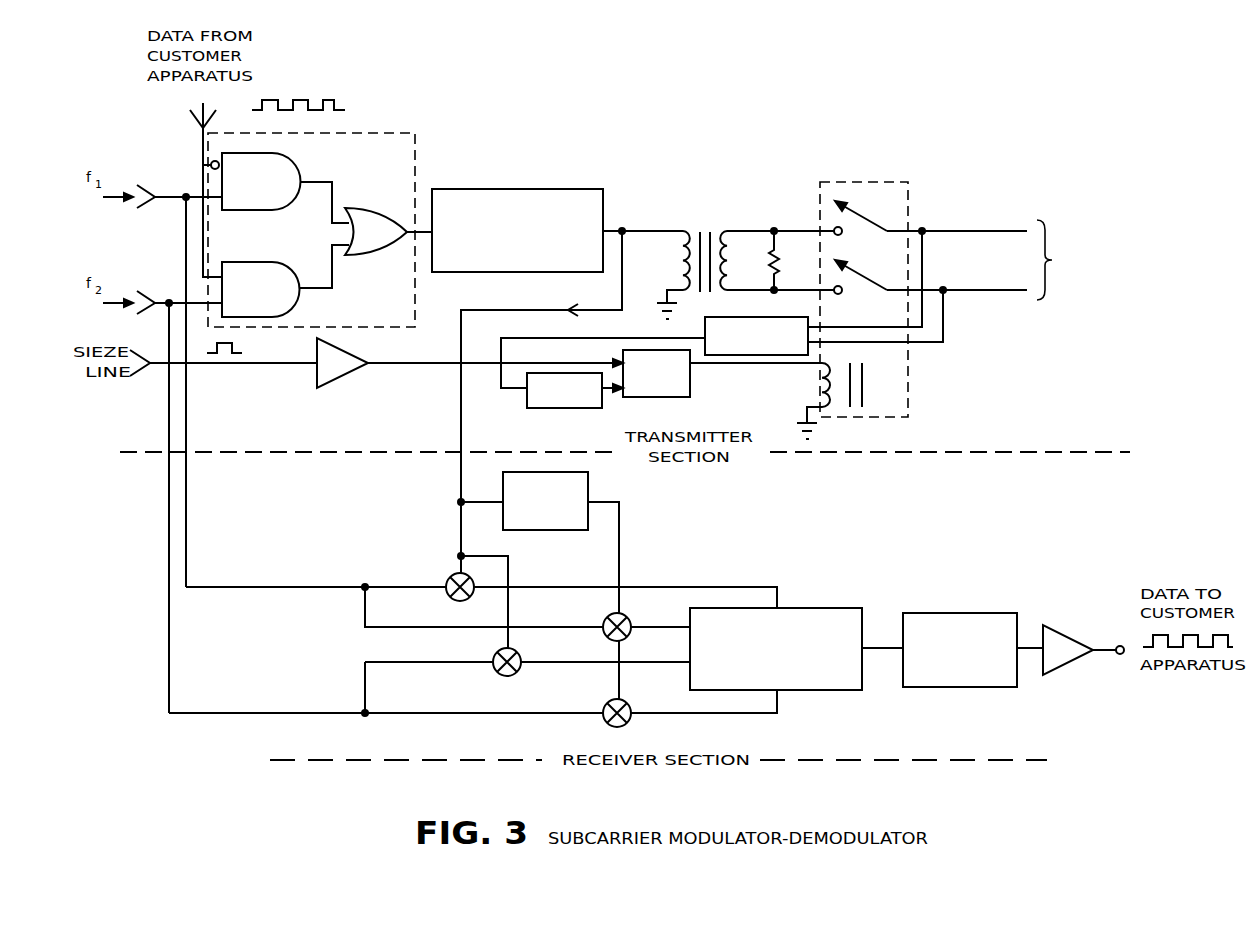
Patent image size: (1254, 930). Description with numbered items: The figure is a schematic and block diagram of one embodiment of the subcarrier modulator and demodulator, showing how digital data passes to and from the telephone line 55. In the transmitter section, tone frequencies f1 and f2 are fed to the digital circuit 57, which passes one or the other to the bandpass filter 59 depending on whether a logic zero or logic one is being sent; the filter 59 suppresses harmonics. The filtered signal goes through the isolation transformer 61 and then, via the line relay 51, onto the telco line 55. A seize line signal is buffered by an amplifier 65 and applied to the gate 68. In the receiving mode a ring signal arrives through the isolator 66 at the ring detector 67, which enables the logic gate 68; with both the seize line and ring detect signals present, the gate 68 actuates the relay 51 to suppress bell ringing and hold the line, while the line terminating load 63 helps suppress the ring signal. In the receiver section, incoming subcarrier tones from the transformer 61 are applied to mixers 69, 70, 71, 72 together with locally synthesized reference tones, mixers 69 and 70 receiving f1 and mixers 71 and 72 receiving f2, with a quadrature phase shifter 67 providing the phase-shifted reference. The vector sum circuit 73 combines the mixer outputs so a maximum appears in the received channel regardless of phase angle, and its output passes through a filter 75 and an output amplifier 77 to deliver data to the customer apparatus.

The line relay 51 is at (875, 182).
The telephone line 55 is at (958, 231).
The digital circuit 57 is at (388, 133).
The bandpass filter 59 is at (530, 187).
The isolation transformer 61 is at (700, 213).
The line terminating load 63 is at (778, 266).
The seize line amplifier 65 is at (342, 378).
The isolator 66 is at (720, 317).
The ring detector 67 is at (555, 408).
The logic gate 68 is at (678, 397).
The mixer 69 is at (452, 577).
The mixer 70 is at (628, 616).
The mixer 71 is at (518, 652).
The mixer 72 is at (608, 702).
The vector sum circuit 73 is at (822, 608).
The filter 75 is at (953, 613).
The output amplifier 77 is at (1067, 633).